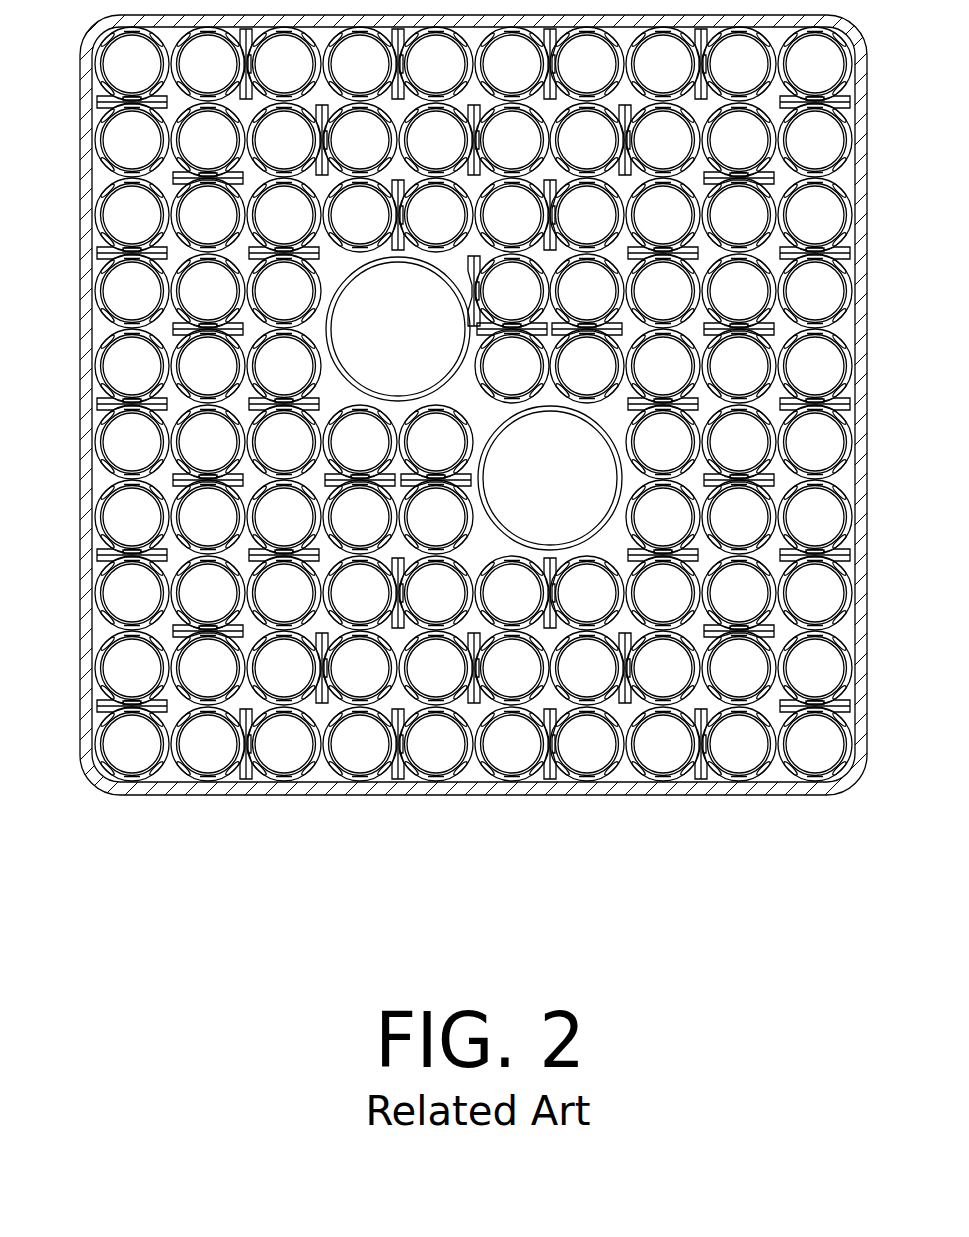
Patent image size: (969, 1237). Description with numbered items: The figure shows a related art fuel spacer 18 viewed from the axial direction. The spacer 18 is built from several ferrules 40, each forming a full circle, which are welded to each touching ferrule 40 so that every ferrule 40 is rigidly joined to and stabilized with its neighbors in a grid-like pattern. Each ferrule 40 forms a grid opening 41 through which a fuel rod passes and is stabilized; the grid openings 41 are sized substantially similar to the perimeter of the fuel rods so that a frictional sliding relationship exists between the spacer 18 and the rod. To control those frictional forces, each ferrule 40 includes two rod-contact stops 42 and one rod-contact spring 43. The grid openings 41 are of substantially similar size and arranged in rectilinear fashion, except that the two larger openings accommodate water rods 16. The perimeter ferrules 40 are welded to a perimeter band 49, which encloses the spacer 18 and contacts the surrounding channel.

The water rod 16 is at (393, 258).
The fuel spacer 18 is at (484, 446).
The ferrule 40 is at (82, 330).
The grid opening 41 is at (280, 648).
The rod-contact stop 42 is at (298, 612).
The rod-contact spring 43 is at (287, 566).
The perimeter band 49 is at (760, 793).